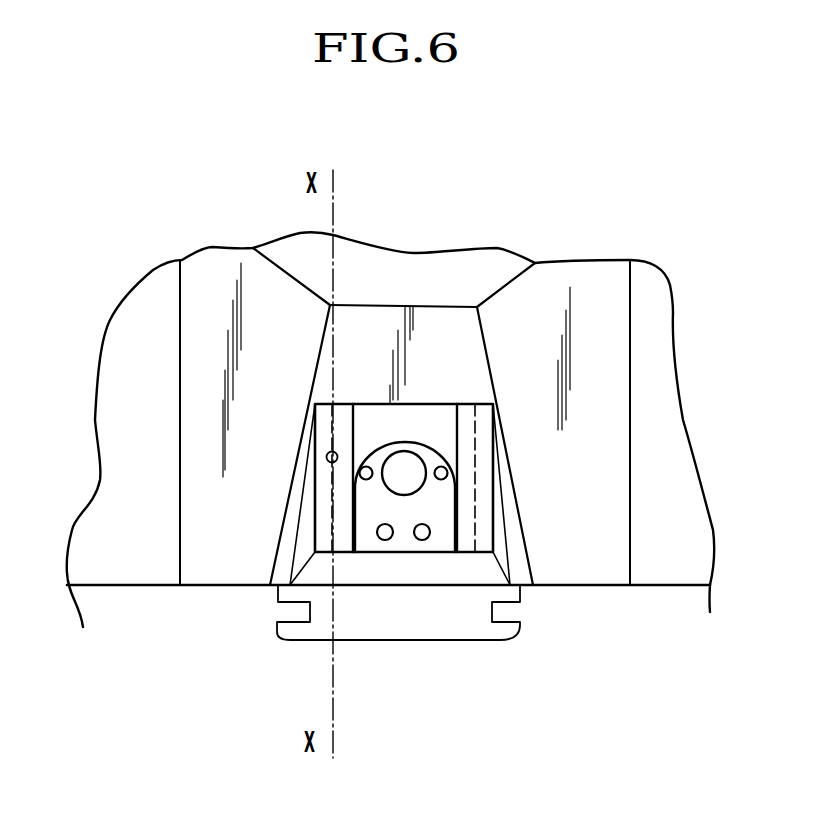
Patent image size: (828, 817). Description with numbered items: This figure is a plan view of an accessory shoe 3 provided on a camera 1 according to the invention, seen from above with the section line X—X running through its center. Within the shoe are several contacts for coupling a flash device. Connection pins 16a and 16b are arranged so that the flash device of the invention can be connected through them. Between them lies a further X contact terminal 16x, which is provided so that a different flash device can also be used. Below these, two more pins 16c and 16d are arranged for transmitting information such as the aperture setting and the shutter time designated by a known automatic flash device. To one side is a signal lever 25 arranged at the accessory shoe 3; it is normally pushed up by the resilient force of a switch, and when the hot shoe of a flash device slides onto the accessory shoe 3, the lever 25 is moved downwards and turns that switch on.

The camera body 1 is at (597, 575).
The accessory shoe 3 is at (466, 410).
The signal lever 25 is at (326, 458).
The X contact terminal 16x is at (405, 450).
The connection pin 16a is at (362, 466).
The connection pin 16b is at (440, 466).
The pin 16c is at (383, 540).
The pin 16d is at (423, 540).